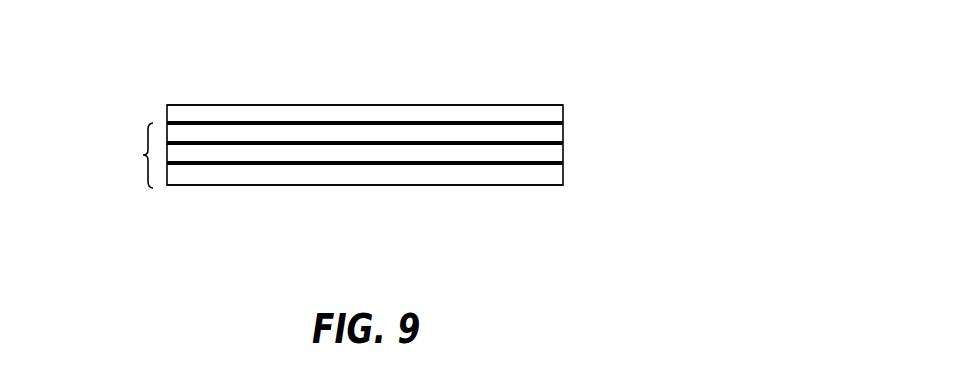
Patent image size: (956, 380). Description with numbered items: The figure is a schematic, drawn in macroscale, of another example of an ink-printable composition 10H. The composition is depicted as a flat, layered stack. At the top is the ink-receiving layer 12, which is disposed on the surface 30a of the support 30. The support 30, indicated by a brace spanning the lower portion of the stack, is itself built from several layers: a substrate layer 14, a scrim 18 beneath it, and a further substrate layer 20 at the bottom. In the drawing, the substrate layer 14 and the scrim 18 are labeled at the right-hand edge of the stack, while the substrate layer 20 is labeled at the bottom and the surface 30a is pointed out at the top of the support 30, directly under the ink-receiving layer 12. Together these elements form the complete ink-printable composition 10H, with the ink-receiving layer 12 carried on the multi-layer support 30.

The ink-printable composition 10H is at (738, 146).
The ink-receiving layer 12 is at (513, 105).
The surface of support 30a is at (228, 123).
The substrate layer 14 is at (563, 134).
The scrim 18 is at (563, 152).
The substrate layer 20 is at (285, 185).
The support 30 is at (127, 153).